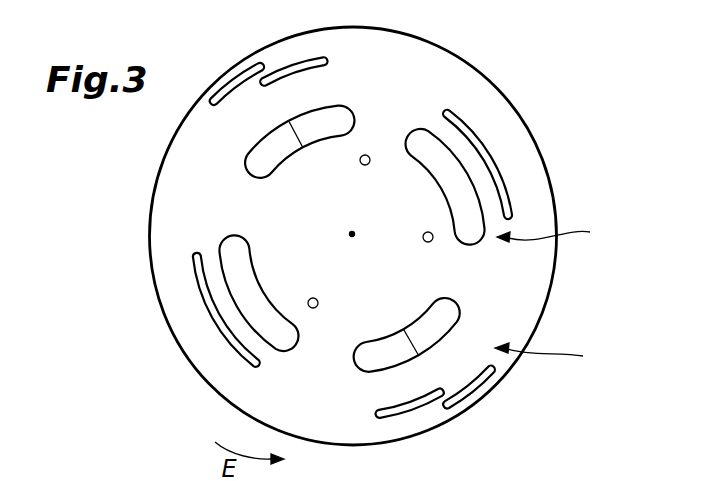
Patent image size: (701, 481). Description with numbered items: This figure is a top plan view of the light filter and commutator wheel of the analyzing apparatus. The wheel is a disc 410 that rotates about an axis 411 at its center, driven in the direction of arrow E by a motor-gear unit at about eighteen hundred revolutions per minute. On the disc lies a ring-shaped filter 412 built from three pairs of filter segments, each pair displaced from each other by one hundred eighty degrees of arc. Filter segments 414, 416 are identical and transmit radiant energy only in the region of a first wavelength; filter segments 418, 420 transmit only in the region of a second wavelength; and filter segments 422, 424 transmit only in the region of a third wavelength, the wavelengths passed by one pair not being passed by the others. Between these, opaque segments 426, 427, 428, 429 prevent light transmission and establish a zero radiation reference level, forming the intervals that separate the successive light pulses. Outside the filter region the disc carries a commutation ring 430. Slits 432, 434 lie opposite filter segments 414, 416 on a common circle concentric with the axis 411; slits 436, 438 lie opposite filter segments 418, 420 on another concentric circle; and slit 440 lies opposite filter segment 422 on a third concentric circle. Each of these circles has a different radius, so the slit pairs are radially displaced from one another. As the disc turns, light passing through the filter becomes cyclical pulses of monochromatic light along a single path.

The disc 410 is at (580, 296).
The axis 411 is at (350, 233).
The filter 412 is at (568, 235).
The filter segment 414 is at (443, 189).
The filter segment 416 is at (272, 290).
The filter segment 418 is at (430, 302).
The filter segment 420 is at (268, 139).
The filter segment 422 is at (302, 60).
The filter segment 424 is at (345, 136).
The opaque segment 426 is at (468, 277).
The opaque segment 427 is at (334, 352).
The opaque segment 428 is at (243, 194).
The opaque segment 429 is at (388, 118).
The commutation ring 430 is at (562, 356).
The slit 432 is at (498, 172).
The slit 434 is at (222, 332).
The slit 436 is at (482, 388).
The slit 438 is at (258, 62).
The slit 440 is at (400, 417).